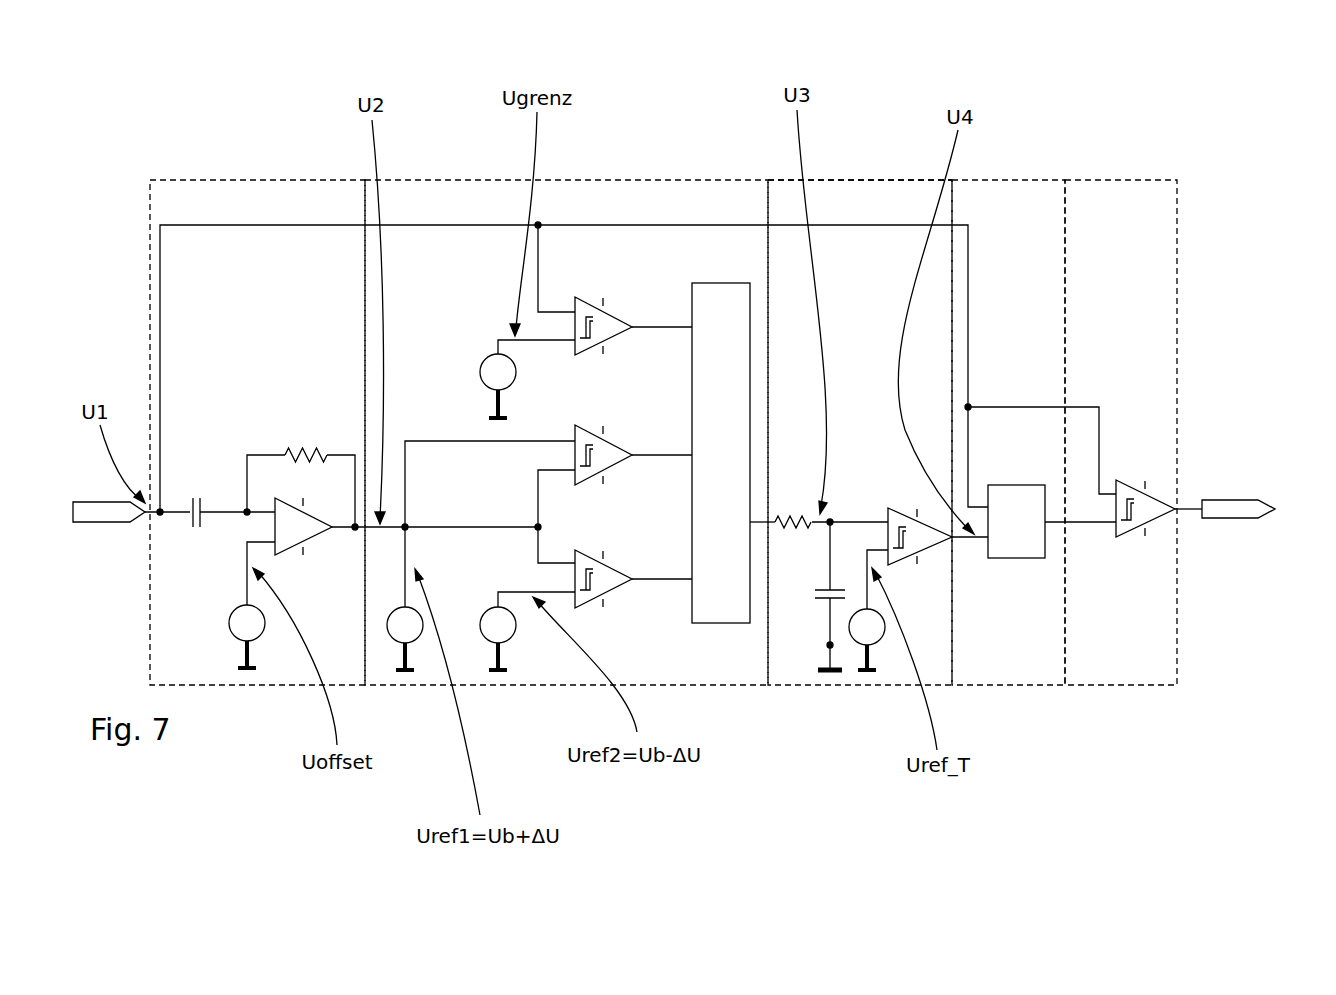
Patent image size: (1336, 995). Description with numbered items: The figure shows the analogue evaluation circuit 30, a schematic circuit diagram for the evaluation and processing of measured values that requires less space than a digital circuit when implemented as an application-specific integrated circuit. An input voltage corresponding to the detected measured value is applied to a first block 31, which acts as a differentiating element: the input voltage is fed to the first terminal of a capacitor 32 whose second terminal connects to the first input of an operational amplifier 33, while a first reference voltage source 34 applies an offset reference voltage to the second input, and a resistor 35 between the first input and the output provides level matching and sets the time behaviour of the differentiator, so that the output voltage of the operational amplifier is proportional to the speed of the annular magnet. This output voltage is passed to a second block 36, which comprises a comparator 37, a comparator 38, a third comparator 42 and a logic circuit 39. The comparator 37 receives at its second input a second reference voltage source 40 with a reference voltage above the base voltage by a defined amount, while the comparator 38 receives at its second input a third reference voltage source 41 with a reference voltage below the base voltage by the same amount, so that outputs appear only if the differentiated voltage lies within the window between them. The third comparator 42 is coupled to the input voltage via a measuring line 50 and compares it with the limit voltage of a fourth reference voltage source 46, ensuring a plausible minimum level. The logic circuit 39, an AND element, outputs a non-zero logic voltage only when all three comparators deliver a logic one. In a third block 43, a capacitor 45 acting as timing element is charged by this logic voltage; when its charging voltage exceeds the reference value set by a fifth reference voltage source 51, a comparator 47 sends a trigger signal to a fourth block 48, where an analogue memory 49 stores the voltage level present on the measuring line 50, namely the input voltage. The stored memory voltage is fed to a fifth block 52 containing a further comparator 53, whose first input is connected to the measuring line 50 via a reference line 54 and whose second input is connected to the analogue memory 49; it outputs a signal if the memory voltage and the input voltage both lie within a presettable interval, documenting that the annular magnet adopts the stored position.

The analogue evaluation circuit 30 is at (1226, 203).
The first block 31 is at (257, 180).
The capacitor 32 is at (190, 526).
The operational amplifier 33 is at (280, 498).
The first reference voltage source 34 is at (262, 640).
The resistor 35 is at (307, 448).
The second block 36 is at (428, 180).
The comparator 37 is at (616, 440).
The comparator 38 is at (612, 583).
The logic circuit 39 is at (728, 295).
The second reference voltage source 40 is at (416, 645).
The reference voltage source Uref2 41 is at (510, 645).
The third comparator 42 is at (624, 331).
The third block 43 is at (878, 180).
The capacitor 45 is at (822, 600).
The fourth reference voltage source 46 is at (486, 365).
The comparator 47 is at (932, 548).
The fourth block 48 is at (1027, 180).
The analogue memory 49 is at (1040, 558).
The measuring line 50 is at (210, 225).
The fifth reference voltage source 51 is at (879, 647).
The fifth block 52 is at (1127, 180).
The comparator 53 is at (1152, 506).
The reference line 54 is at (1010, 407).